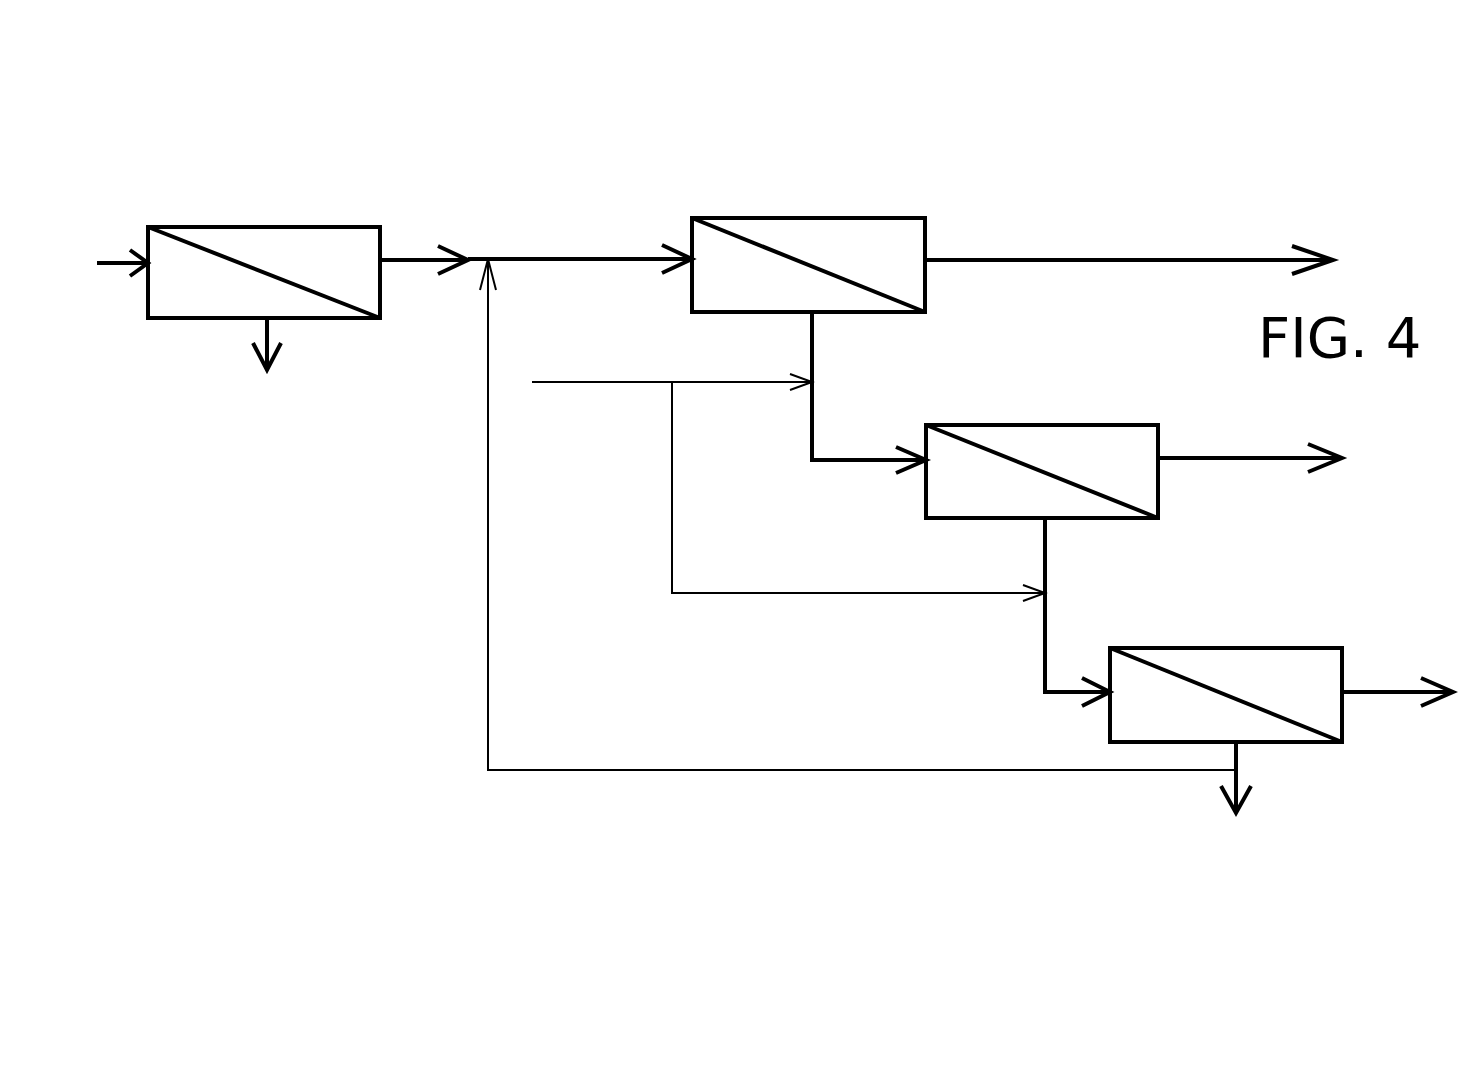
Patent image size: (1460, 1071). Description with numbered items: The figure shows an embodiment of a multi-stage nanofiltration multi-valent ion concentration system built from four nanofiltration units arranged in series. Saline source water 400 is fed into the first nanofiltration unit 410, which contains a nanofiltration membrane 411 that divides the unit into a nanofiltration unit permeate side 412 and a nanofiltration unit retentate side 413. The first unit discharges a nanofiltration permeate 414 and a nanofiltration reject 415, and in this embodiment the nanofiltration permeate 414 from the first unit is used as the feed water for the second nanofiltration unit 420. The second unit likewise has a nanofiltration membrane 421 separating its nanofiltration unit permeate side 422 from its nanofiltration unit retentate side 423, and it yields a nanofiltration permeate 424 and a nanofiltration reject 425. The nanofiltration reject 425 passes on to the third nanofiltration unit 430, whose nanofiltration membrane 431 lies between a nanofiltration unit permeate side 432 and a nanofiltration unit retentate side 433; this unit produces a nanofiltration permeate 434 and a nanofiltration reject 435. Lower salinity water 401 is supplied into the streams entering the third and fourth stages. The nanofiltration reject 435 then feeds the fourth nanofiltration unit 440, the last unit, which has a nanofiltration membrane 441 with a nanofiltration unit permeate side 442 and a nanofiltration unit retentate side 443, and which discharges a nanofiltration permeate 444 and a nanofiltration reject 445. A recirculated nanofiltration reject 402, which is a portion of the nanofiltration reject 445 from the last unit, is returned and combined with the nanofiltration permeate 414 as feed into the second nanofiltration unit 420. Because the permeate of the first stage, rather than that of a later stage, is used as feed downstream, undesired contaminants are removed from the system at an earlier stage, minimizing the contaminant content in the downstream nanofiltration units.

The saline source water 400 is at (129, 249).
The lower salinity water 401 is at (606, 382).
The recirculated nanofiltration reject 402 is at (656, 770).
The nanofiltration unit 410 is at (204, 226).
The nanofiltration membrane 411 is at (285, 283).
The nanofiltration unit permeate side 412 is at (262, 243).
The nanofiltration unit retentate side 413 is at (178, 285).
The nanofiltration permeate 414 is at (411, 251).
The nanofiltration reject 415 is at (272, 330).
The nanofiltration unit 420 is at (750, 217).
The nanofiltration membrane 421 is at (824, 270).
The nanofiltration unit permeate side 422 is at (828, 243).
The nanofiltration unit retentate side 423 is at (736, 285).
The nanofiltration permeate 424 is at (1054, 258).
The nanofiltration reject 425 is at (815, 352).
The nanofiltration unit 430 is at (1006, 424).
The nanofiltration membrane 431 is at (1070, 478).
The nanofiltration unit permeate side 432 is at (1071, 440).
The nanofiltration unit retentate side 433 is at (966, 492).
The nanofiltration permeate 434 is at (1219, 457).
The nanofiltration reject 435 is at (1048, 556).
The nanofiltration unit 440 is at (1176, 647).
The nanofiltration membrane 441 is at (1252, 702).
The nanofiltration unit permeate side 442 is at (1236, 668).
The nanofiltration unit retentate side 443 is at (1143, 712).
The nanofiltration permeate 444 is at (1381, 690).
The nanofiltration reject 445 is at (1240, 772).